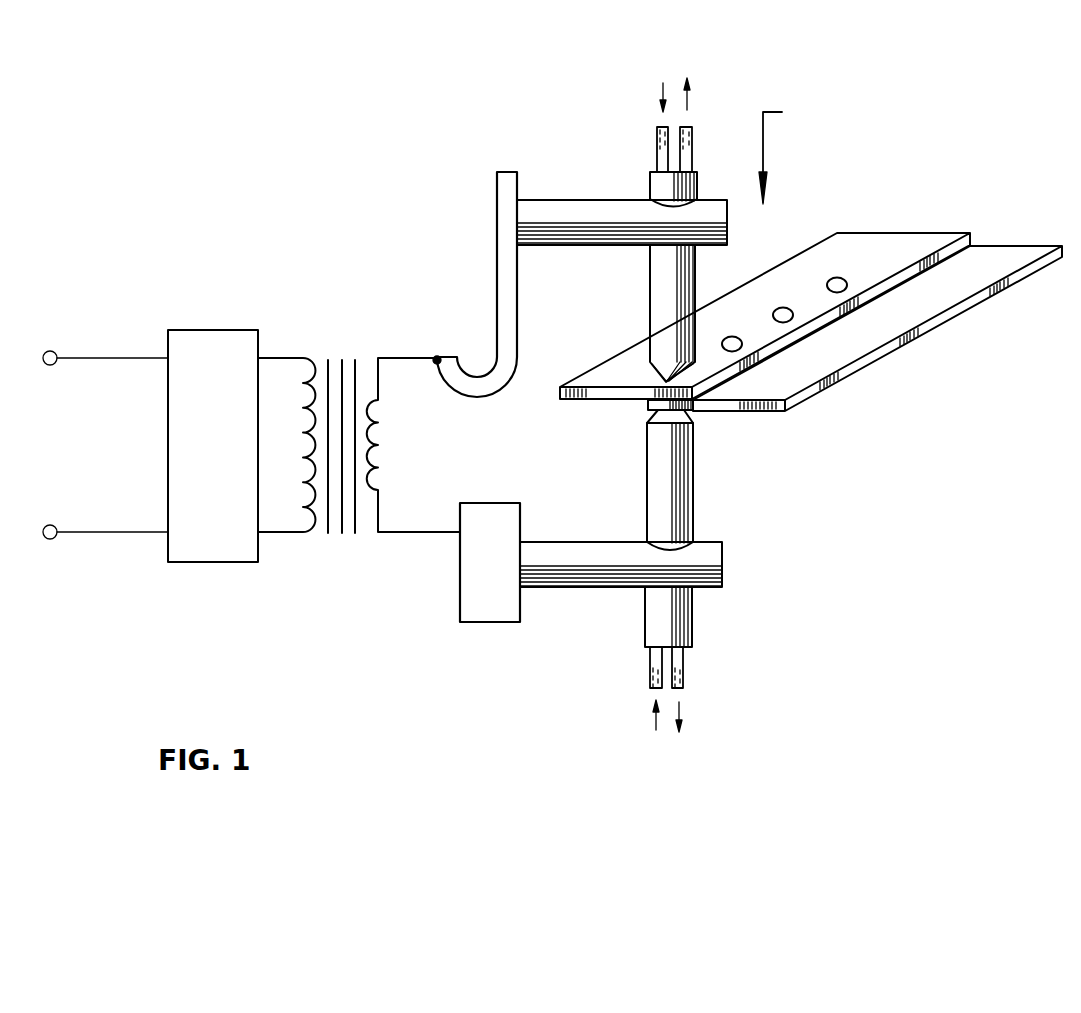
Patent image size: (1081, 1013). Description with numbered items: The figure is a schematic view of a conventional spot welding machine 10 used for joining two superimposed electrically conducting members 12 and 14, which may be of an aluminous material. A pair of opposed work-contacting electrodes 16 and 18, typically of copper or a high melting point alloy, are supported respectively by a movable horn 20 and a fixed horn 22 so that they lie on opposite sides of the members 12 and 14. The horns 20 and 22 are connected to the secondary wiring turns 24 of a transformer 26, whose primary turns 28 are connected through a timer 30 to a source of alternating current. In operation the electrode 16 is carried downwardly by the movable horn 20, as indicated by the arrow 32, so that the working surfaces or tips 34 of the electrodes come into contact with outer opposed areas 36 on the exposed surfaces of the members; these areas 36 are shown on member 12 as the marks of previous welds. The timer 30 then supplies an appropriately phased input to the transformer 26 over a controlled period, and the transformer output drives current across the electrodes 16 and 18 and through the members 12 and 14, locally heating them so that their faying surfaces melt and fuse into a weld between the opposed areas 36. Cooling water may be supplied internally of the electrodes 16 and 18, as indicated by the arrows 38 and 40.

The spot welding machine 10 is at (465, 277).
The electrically conducting member 12 is at (930, 242).
The electrically conducting member 14 is at (1017, 253).
The work-contacting electrode 16 is at (662, 302).
The work-contacting electrode 18 is at (658, 490).
The movable horn 20 is at (605, 210).
The fixed horn 22 is at (563, 587).
The secondary wiring turns 24 is at (377, 457).
The transformer 26 is at (363, 323).
The primary turns 28 is at (310, 515).
The timer 30 is at (193, 548).
The arrow 32 is at (789, 151).
The working surfaces or tips 34 is at (668, 377).
The outer opposed areas 36 is at (840, 287).
The arrow 38 is at (687, 98).
The arrow 40 is at (678, 705).